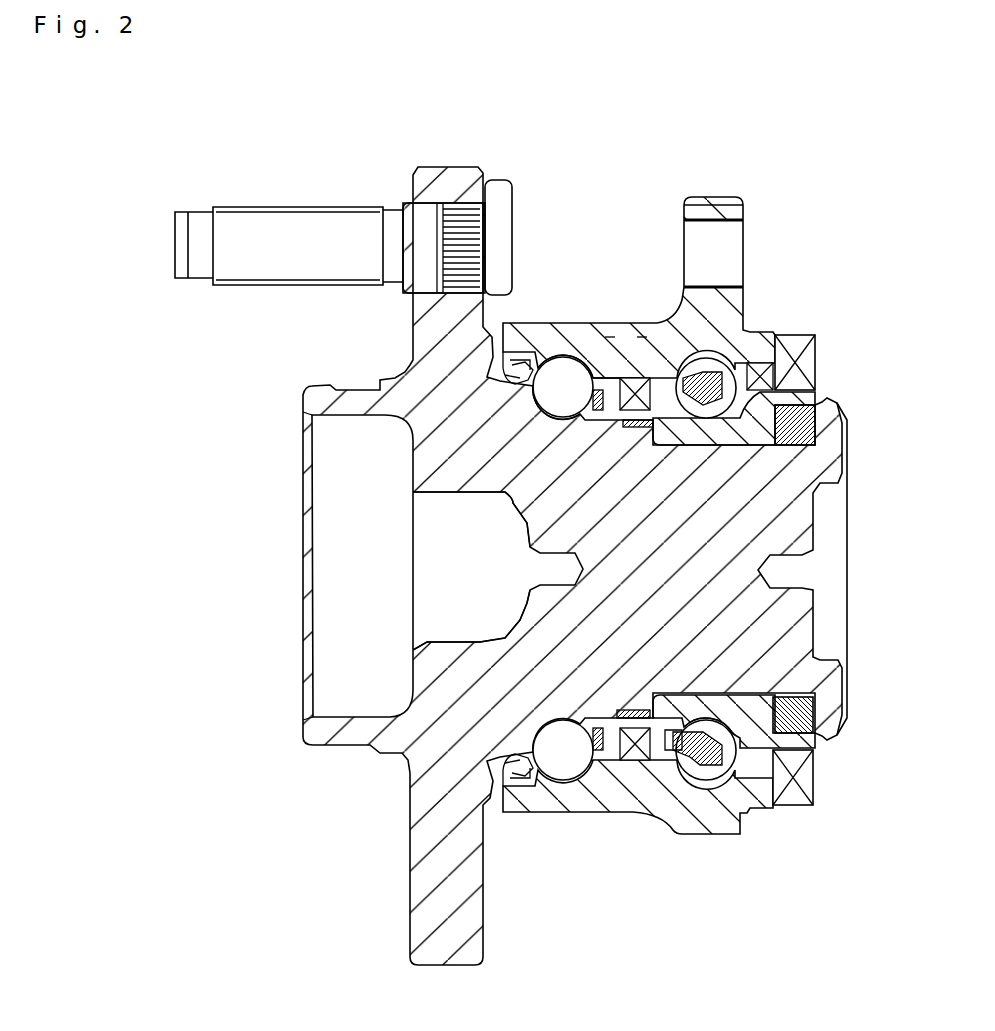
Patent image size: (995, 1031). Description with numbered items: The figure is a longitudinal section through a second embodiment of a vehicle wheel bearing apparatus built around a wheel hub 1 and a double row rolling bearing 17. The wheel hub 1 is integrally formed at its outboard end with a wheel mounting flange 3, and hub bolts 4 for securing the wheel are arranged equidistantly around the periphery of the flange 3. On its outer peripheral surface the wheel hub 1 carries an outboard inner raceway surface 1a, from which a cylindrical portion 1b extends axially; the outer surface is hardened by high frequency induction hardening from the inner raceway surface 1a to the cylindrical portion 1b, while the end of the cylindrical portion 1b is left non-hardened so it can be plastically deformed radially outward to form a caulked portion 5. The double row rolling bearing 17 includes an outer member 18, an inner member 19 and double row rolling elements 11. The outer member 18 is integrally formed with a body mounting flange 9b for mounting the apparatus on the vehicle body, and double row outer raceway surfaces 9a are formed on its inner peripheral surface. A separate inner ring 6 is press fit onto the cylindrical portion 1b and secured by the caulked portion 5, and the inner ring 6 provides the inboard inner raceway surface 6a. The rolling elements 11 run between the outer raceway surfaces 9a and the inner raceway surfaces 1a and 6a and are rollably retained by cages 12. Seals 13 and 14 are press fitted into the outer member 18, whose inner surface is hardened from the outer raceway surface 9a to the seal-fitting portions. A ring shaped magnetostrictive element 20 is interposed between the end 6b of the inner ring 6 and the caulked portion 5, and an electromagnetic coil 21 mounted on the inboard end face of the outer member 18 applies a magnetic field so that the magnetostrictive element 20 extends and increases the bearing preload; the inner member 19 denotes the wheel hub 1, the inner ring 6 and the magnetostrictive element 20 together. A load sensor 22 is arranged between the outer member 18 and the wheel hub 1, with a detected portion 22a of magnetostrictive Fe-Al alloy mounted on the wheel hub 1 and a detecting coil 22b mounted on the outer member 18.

The wheel hub 1 is at (377, 398).
The inner raceway surface 1a is at (557, 397).
The cylindrical portion 1b is at (770, 392).
The wheel mounting flange 3 is at (453, 175).
The hub bolt 4 is at (290, 220).
The caulked portion 5 is at (833, 722).
The inner ring 6 is at (778, 743).
The inner raceway surface 6a is at (723, 740).
The end of the inner ring 6b is at (813, 780).
The outer raceway surface 9a is at (558, 333).
The body mounting flange 9b is at (710, 205).
The rolling element 11 is at (565, 770).
The cage 12 is at (612, 762).
The seal 13 is at (512, 787).
The seal 14 is at (758, 737).
The double row rolling bearing 17 is at (635, 213).
The outer member 18 is at (587, 322).
The inner member 19 is at (455, 501).
The magnetostrictive element 20 is at (800, 403).
The electromagnetic coil 21 is at (797, 335).
The load sensor 22 is at (677, 280).
The detected portion 22a is at (610, 337).
The detecting coil 22b is at (642, 337).